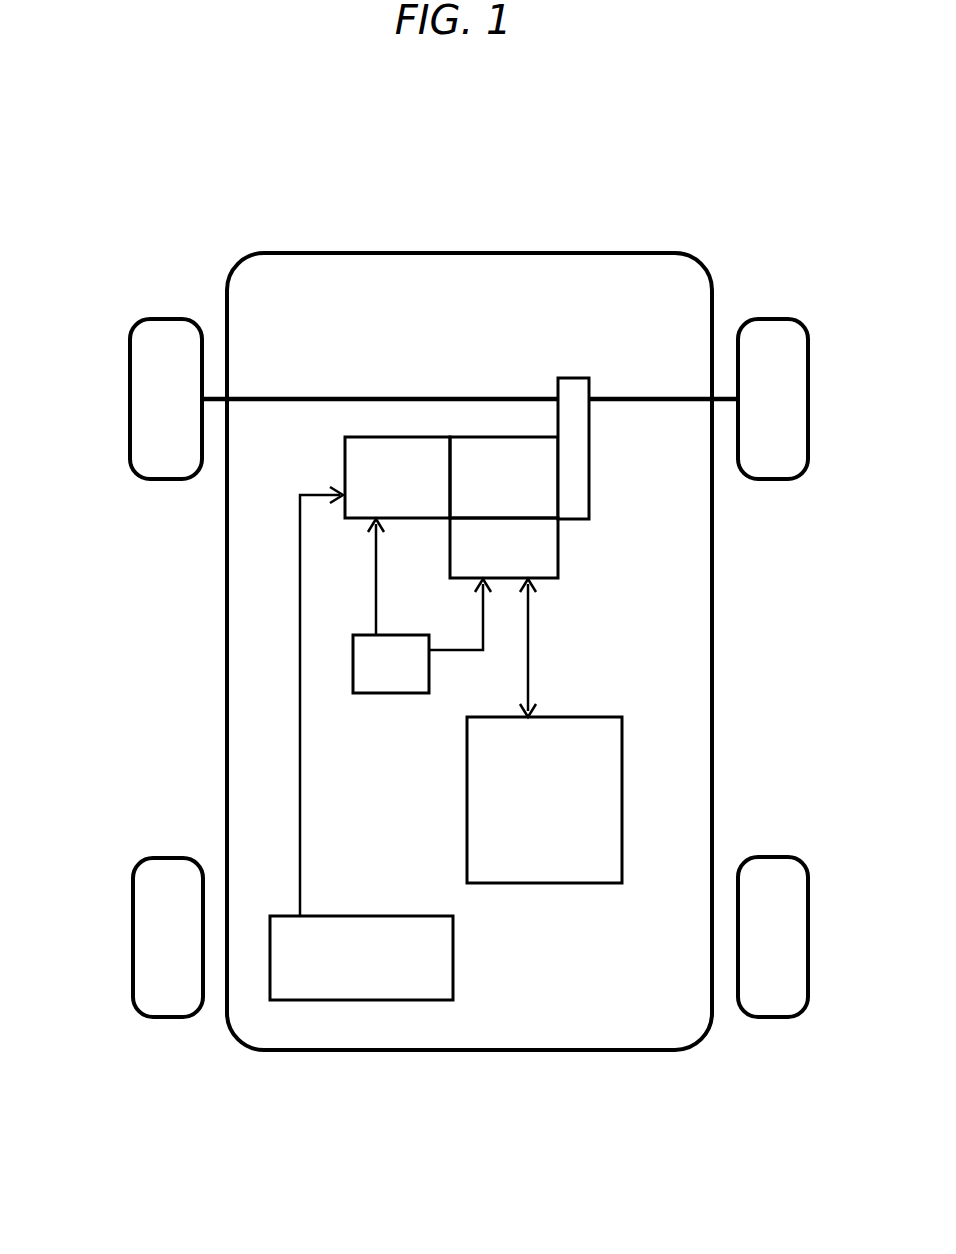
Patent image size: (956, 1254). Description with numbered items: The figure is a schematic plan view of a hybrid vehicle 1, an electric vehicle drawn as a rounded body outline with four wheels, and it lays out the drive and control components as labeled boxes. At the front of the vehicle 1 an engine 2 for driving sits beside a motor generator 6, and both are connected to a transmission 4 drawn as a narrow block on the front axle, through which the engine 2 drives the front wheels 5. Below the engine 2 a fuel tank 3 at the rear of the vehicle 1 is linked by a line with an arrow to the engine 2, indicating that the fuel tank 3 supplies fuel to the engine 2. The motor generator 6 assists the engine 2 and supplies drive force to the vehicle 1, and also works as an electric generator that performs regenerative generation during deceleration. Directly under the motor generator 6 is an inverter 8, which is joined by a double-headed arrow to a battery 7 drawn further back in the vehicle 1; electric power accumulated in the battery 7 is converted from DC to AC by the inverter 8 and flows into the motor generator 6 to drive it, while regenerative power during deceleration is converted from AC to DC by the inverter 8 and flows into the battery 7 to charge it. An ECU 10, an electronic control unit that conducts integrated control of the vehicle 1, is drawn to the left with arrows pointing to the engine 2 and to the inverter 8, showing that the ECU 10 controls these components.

The vehicle 1 is at (723, 181).
The engine 2 is at (372, 437).
The fuel tank 3 is at (320, 1000).
The transmission 4 is at (589, 488).
The front wheels 5 is at (153, 318).
The motor generator 6 is at (508, 437).
The battery 7 is at (622, 765).
The inverter 8 is at (559, 565).
The ECU 10 is at (353, 664).